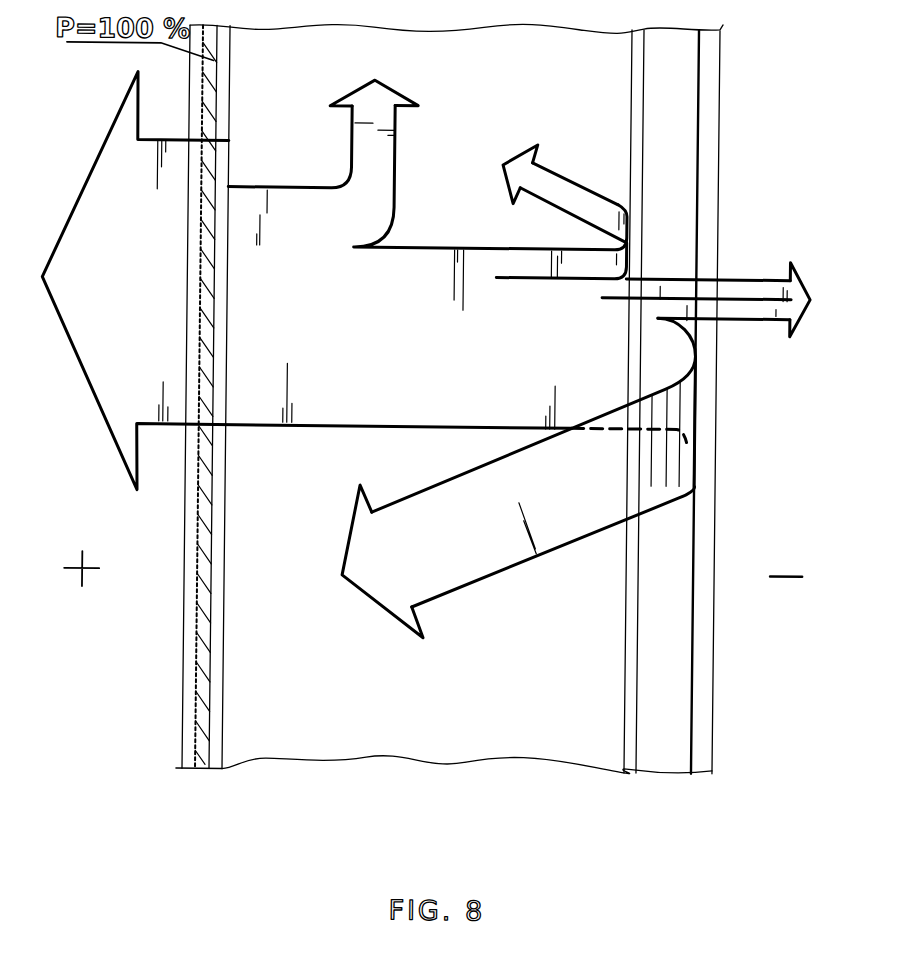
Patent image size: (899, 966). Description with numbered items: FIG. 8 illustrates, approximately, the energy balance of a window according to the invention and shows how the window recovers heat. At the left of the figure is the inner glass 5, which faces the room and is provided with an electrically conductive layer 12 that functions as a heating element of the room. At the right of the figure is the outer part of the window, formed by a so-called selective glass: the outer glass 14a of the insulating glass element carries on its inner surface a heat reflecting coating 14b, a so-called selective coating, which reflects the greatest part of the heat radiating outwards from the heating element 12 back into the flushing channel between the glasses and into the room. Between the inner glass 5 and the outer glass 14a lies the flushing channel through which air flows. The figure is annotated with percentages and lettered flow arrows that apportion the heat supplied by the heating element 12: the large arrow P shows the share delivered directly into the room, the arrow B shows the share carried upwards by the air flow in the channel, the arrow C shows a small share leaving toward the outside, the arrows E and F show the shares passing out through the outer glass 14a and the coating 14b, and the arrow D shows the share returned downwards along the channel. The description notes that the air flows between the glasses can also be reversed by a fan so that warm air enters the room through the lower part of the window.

The inner glass 5 is at (192, 635).
The electrically conductive layer 12 is at (201, 513).
The outer glass of the insulating glass element 14a is at (711, 197).
The heat reflecting coating 14b is at (690, 98).
The air flow arrow 60% P is at (97, 192).
The upward air flow arrow 12% B is at (379, 108).
The air flow arrow 3% C is at (575, 196).
The downward air flow arrow 16% D is at (474, 570).
The outflow arrow 5% E is at (772, 278).
The outflow arrow 4% F is at (771, 318).